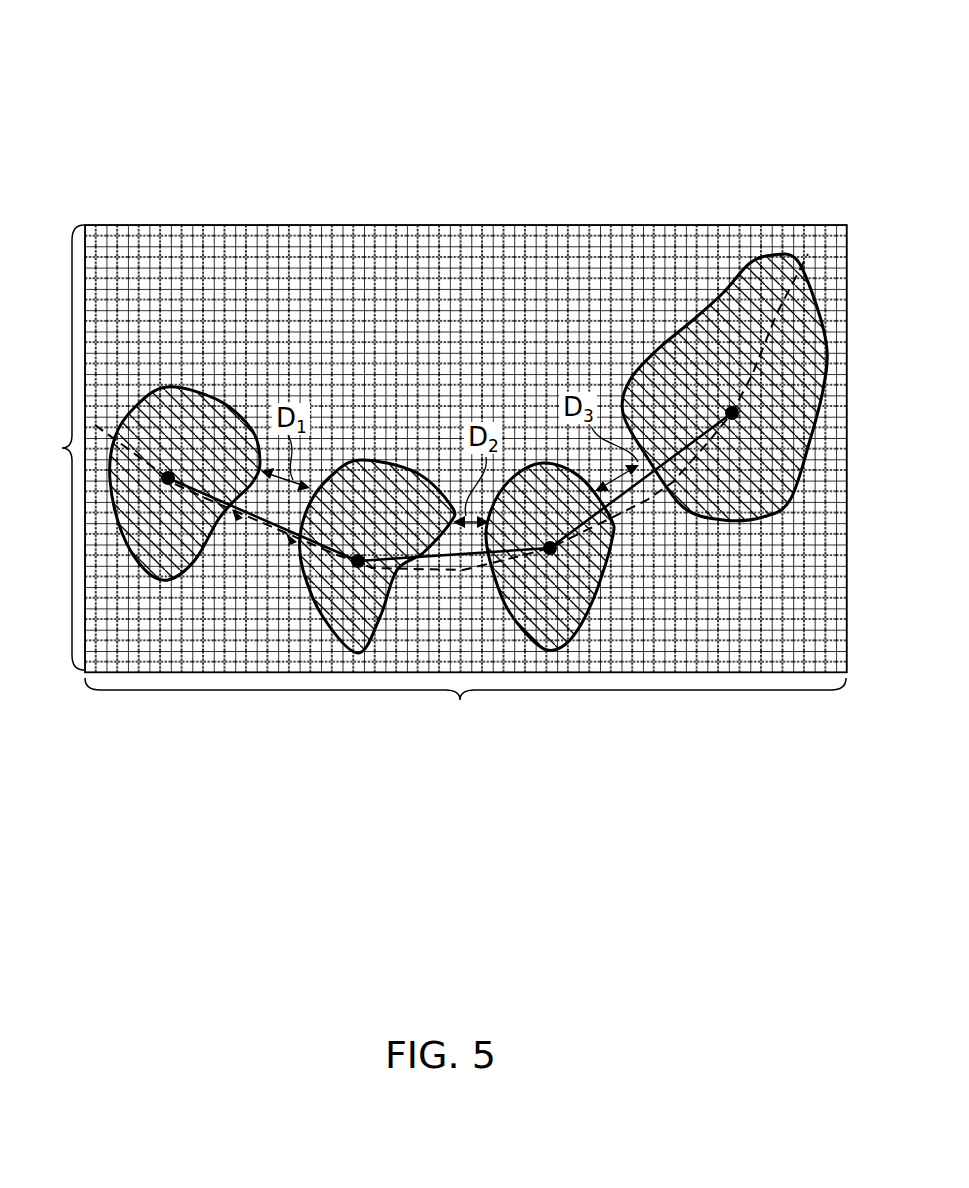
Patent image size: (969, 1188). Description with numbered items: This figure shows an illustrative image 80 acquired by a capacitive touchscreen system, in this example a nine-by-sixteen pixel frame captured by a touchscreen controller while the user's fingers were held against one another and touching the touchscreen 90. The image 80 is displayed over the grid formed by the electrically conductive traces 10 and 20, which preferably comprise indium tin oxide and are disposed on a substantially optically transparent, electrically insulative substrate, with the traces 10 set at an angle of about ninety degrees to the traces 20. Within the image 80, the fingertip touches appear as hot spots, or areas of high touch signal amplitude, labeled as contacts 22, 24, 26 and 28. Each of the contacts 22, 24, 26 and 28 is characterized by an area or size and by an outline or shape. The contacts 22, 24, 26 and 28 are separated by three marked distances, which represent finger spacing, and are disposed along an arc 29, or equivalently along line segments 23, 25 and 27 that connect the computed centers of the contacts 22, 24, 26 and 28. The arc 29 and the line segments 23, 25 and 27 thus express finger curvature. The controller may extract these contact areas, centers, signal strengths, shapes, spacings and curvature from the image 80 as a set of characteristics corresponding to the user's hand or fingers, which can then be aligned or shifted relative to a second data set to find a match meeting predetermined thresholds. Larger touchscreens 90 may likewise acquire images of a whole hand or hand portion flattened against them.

The electrically conductive traces 10 is at (58, 447).
The electrically conductive traces 20 is at (465, 700).
The contact 22 is at (183, 432).
The line segment 23 is at (252, 523).
The contact 24 is at (380, 505).
The line segment 25 is at (457, 557).
The contact 26 is at (562, 652).
The line segment 27 is at (640, 500).
The contact 28 is at (733, 457).
The arc 29 is at (98, 424).
The image 80 is at (483, 345).
The touchscreen 90 is at (615, 174).